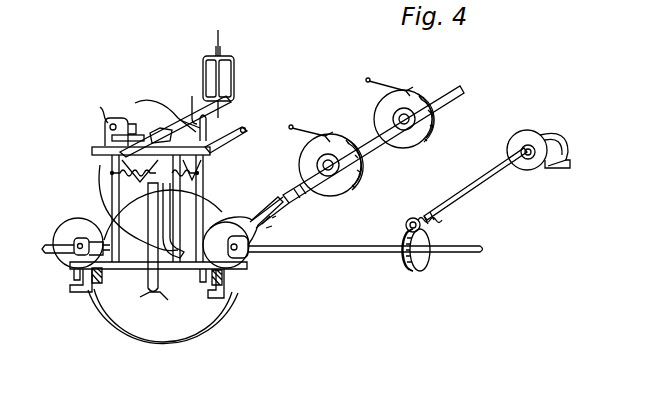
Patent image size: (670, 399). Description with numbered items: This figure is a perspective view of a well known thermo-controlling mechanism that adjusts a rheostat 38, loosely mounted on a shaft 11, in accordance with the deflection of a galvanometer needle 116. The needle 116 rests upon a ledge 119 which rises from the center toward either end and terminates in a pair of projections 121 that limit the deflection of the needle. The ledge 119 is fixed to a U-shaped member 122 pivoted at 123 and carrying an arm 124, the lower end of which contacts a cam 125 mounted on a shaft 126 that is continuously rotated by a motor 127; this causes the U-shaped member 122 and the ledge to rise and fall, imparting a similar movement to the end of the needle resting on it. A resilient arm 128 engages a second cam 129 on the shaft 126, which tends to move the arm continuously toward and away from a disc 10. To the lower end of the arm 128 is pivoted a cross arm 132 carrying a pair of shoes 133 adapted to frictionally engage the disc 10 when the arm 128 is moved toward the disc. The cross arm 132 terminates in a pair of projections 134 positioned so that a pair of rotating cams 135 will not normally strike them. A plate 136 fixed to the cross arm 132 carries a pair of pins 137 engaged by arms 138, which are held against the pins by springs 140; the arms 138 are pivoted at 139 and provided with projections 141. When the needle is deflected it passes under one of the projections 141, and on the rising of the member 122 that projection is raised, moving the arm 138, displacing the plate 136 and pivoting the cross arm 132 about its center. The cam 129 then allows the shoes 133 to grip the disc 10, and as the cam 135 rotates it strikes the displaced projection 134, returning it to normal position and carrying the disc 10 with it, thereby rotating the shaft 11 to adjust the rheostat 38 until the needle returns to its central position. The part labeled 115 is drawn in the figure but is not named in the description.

The solenoid block 115 is at (201, 72).
The galvanometer needle 116 is at (138, 103).
The ledge 119 is at (104, 138).
The pivot 139 is at (190, 97).
The projections 121 is at (158, 132).
The projections 141 is at (160, 131).
The pivot 123 is at (224, 127).
The U-shaped member 122 is at (246, 131).
The springs 140 is at (96, 159).
The resilient arm 128 is at (116, 183).
The second cam 129 is at (108, 198).
The disc 10 is at (118, 316).
The rotating cams 135 is at (62, 228).
The shaft 11 is at (274, 220).
The shaft 126 is at (352, 245).
The cross arm 132 is at (216, 302).
The pins 137 is at (128, 318).
The plate 136 is at (143, 300).
The arms 138 is at (92, 283).
The shoes 133 is at (88, 290).
The projections 134 is at (82, 272).
The arm 124 is at (210, 162).
The cam 125 is at (208, 177).
The rheostat 38 is at (434, 96).
The motor 127 is at (562, 140).